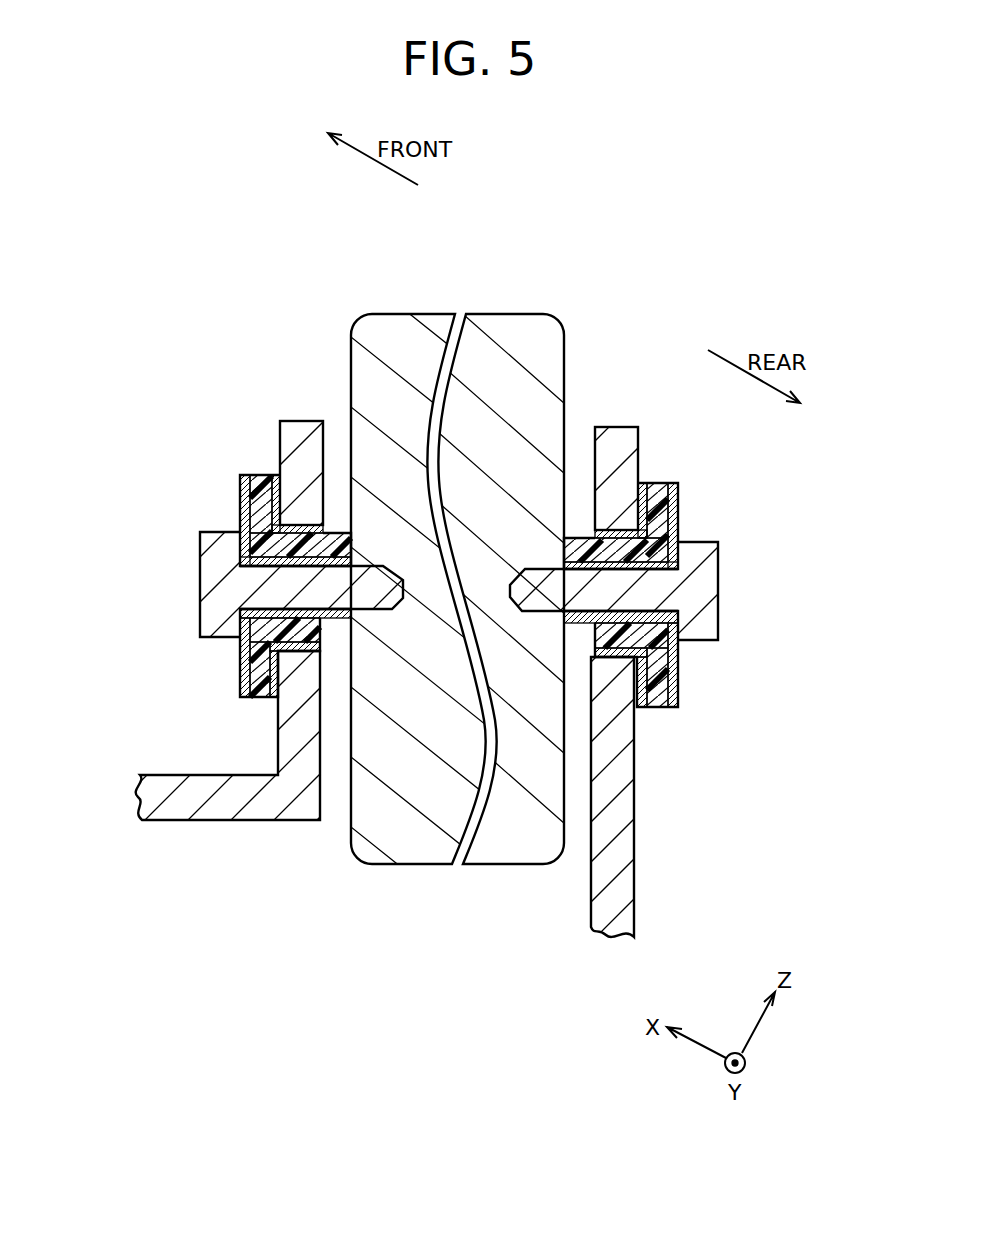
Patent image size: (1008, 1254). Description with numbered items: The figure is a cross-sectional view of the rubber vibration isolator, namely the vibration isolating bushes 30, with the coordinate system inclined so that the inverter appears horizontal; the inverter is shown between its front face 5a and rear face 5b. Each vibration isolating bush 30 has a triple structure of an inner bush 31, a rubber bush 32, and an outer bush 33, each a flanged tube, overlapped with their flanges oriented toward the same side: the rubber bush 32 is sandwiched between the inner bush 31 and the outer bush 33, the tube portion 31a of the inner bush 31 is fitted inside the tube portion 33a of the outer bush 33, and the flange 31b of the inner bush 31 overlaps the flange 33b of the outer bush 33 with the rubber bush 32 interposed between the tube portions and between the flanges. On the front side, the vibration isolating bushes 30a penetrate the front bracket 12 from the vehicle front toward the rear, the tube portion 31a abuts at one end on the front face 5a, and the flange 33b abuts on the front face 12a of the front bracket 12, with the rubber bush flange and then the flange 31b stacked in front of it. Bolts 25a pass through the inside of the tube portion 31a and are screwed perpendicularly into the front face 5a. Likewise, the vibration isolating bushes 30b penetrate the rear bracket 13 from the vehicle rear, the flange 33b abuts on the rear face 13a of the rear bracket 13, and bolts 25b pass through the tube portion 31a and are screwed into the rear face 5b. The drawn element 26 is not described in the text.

The front face of the inverter 5a is at (341, 376).
The rear face of the inverter 5b is at (574, 376).
The front bracket 12 is at (170, 806).
The front face of the front bracket 12a is at (275, 416).
The rear bracket 13 is at (620, 857).
The rear face of the rear bracket 13a is at (643, 423).
The bolt 25a is at (213, 573).
The bolt 25b is at (705, 580).
The protrusion 26 is at (222, 519).
The vibration isolating bush 30 is at (462, 494).
The vibration isolating bush 30a is at (160, 420).
The vibration isolating bush 30b is at (762, 430).
The inner bush 31 is at (229, 496).
The rubber bush 32 is at (272, 462).
The outer bush 33 is at (259, 463).
The tube portion of the inner bush 31a is at (340, 619).
The flange of the inner bush 31b is at (239, 678).
The tube portion of the outer bush 33a is at (320, 648).
The flange of the outer bush 33b is at (276, 699).